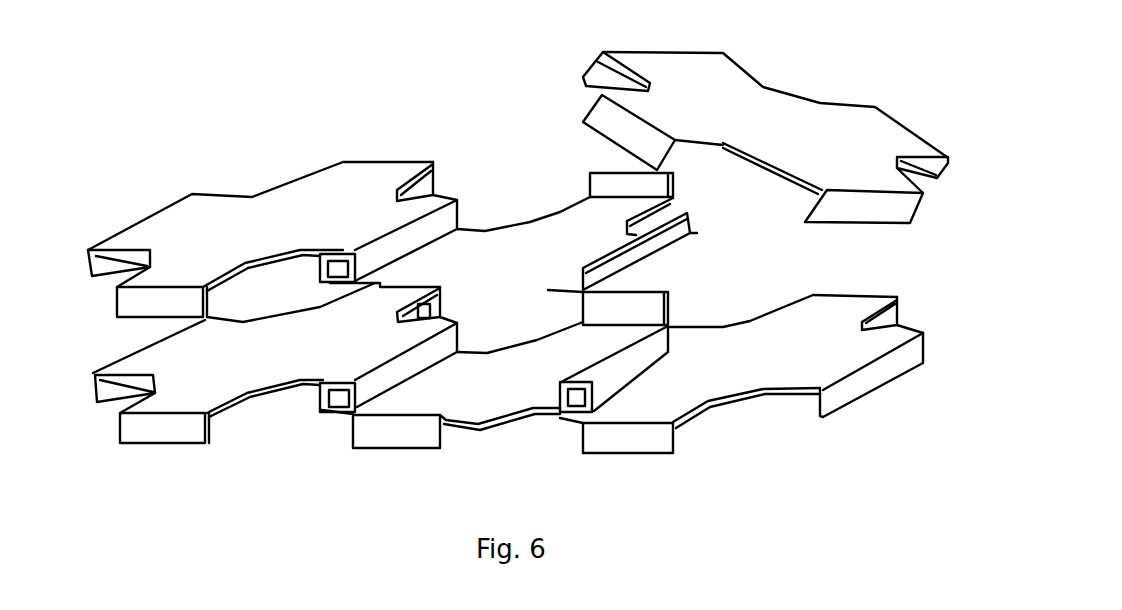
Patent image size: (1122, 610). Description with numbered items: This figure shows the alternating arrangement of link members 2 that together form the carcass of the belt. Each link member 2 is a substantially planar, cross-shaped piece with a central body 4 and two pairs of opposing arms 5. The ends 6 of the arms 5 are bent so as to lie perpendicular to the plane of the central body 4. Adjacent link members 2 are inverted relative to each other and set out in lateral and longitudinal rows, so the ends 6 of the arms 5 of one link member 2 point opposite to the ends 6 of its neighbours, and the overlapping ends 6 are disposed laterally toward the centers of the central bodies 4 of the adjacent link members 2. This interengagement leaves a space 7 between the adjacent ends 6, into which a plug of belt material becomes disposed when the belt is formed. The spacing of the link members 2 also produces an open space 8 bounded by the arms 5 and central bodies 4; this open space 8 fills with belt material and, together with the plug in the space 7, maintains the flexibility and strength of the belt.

The link member 2 is at (278, 158).
The central body 4 is at (768, 123).
The arms 5 is at (413, 206).
The ends of the arms 6 is at (447, 222).
The space 7 is at (332, 262).
The open space 8 is at (242, 292).